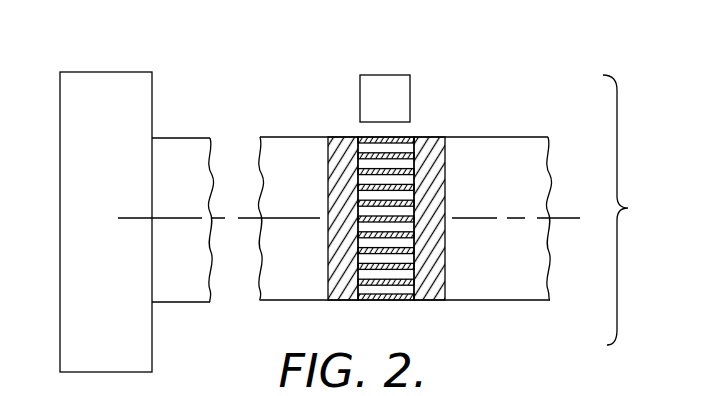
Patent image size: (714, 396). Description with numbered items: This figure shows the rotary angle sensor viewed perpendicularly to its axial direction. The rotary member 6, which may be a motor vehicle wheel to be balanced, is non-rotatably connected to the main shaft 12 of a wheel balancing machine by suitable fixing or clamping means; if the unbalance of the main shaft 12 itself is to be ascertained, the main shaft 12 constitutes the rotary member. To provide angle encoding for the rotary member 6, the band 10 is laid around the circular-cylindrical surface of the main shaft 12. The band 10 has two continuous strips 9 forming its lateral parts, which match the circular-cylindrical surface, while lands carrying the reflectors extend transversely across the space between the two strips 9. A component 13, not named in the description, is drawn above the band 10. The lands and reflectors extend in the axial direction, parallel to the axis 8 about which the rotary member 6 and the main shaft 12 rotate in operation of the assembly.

The rotary member 6 is at (98, 80).
The axis 8 is at (567, 219).
The continuous strips 9 is at (328, 156).
The band 10 is at (438, 312).
The main shaft 12 is at (498, 138).
The sensor housing 13 is at (380, 80).